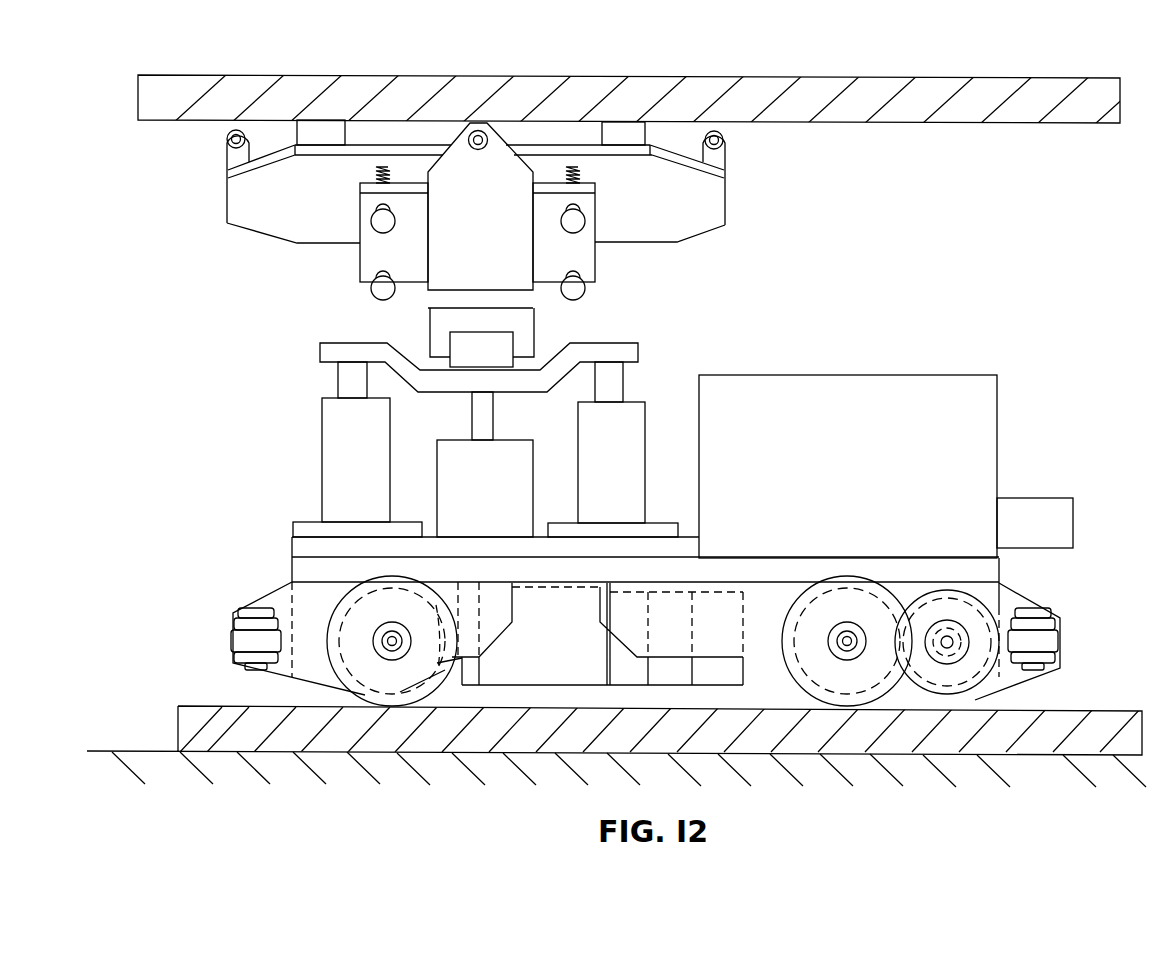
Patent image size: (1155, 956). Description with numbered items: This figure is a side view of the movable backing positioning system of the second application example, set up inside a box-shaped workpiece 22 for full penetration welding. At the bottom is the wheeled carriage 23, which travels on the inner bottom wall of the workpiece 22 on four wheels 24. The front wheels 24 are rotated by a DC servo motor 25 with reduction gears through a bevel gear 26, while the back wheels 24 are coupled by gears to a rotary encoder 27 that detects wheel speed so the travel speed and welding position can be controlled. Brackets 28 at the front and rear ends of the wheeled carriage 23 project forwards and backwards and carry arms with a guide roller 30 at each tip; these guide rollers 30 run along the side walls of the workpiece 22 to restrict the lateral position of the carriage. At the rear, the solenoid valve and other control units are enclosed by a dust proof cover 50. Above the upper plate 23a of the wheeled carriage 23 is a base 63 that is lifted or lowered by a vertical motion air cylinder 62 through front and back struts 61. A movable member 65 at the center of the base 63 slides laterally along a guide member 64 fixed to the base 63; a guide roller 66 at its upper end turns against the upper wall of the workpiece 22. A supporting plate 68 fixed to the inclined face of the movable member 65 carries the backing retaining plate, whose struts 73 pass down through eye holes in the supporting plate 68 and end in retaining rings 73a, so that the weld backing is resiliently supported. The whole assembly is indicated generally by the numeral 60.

The workpiece 22 is at (998, 125).
The wheeled carriage 23 is at (283, 574).
The upper plate 23a is at (988, 573).
The wheels 24 is at (392, 706).
The DC servo motor 25 is at (625, 685).
The bevel gear 26 is at (440, 683).
The rotary encoder 27 is at (982, 680).
The brackets 28 is at (278, 598).
The guide roller 30 is at (240, 640).
The dust proof cover 50 is at (985, 452).
The lifting device 60 is at (993, 334).
The struts 61 is at (337, 435).
The vertical motion air cylinder 62 is at (453, 467).
The base 63 is at (633, 343).
The guide member 64 is at (503, 347).
The movable member 65 is at (435, 238).
The guide roller 66 is at (481, 122).
The supporting plate 68 is at (578, 250).
The struts 73 is at (376, 172).
The retaining ring 73a is at (372, 222).